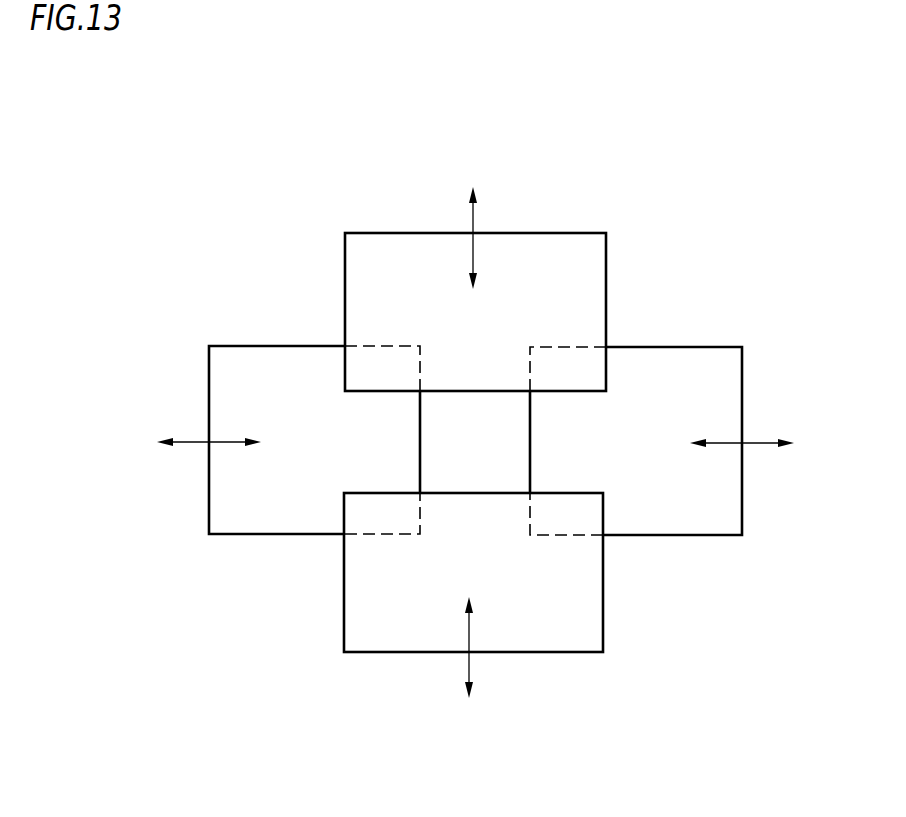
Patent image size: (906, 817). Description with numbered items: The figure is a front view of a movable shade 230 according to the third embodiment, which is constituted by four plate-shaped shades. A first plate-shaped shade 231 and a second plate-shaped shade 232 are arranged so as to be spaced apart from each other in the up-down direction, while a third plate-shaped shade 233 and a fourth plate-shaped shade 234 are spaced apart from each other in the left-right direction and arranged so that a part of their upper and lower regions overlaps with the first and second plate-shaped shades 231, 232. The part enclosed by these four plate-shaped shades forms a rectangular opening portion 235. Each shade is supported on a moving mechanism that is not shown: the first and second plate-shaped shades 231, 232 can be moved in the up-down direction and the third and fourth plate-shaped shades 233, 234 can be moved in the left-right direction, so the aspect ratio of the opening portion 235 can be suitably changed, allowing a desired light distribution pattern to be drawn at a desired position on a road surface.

The movable shade 230 is at (369, 176).
The first plate-shaped shade 231 is at (562, 242).
The second plate-shaped shade 232 is at (395, 630).
The third plate-shaped shade 233 is at (259, 365).
The fourth plate-shaped shade 234 is at (693, 360).
The opening portion 235 is at (512, 437).